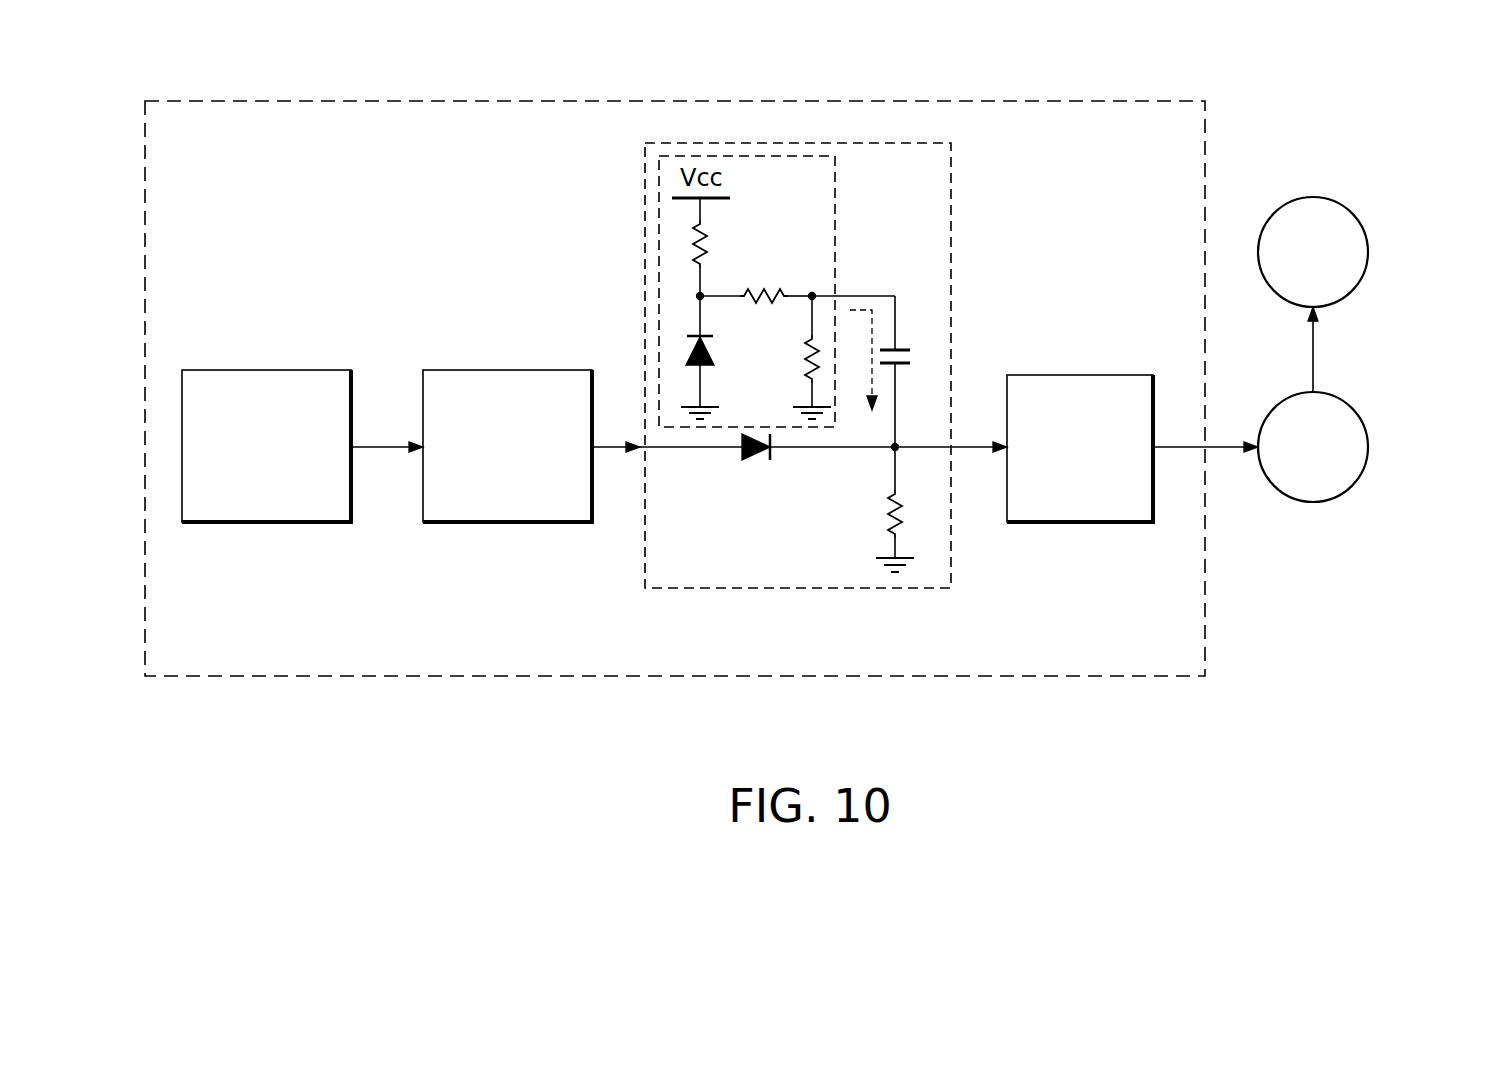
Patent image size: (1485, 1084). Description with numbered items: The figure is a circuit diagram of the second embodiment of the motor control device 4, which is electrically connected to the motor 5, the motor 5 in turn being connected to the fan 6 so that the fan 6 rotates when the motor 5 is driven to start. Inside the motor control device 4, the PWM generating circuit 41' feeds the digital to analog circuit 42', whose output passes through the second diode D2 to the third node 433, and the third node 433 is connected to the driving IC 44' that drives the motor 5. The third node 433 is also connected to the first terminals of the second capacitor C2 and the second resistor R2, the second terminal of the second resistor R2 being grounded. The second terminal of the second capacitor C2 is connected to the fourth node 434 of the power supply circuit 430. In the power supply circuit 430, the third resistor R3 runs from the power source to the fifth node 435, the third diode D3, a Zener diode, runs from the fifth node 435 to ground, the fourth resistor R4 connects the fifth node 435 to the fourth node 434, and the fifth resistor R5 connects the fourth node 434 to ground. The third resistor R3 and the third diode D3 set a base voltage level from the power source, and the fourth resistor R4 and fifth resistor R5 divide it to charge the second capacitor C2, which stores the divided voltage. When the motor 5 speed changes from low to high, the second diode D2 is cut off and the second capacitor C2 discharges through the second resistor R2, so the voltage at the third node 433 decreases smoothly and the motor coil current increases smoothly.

The motor control device 4 is at (634, 100).
The PWM generating circuit 41' is at (266, 396).
The digital to analog circuit 42' is at (507, 396).
The power supply circuit 430 is at (657, 178).
The third node 433 is at (897, 445).
The fourth node 434 is at (814, 295).
The fifth node 435 is at (700, 296).
The driving IC 44' is at (1080, 398).
The motor 5 is at (1368, 447).
The fan 6 is at (1368, 252).
The second resistor R2 is at (888, 512).
The third resistor R3 is at (708, 231).
The fourth resistor R4 is at (776, 294).
The fifth resistor R5 is at (804, 360).
The second diode D2 is at (753, 463).
The third diode D3 is at (713, 350).
The second capacitor C2 is at (904, 348).